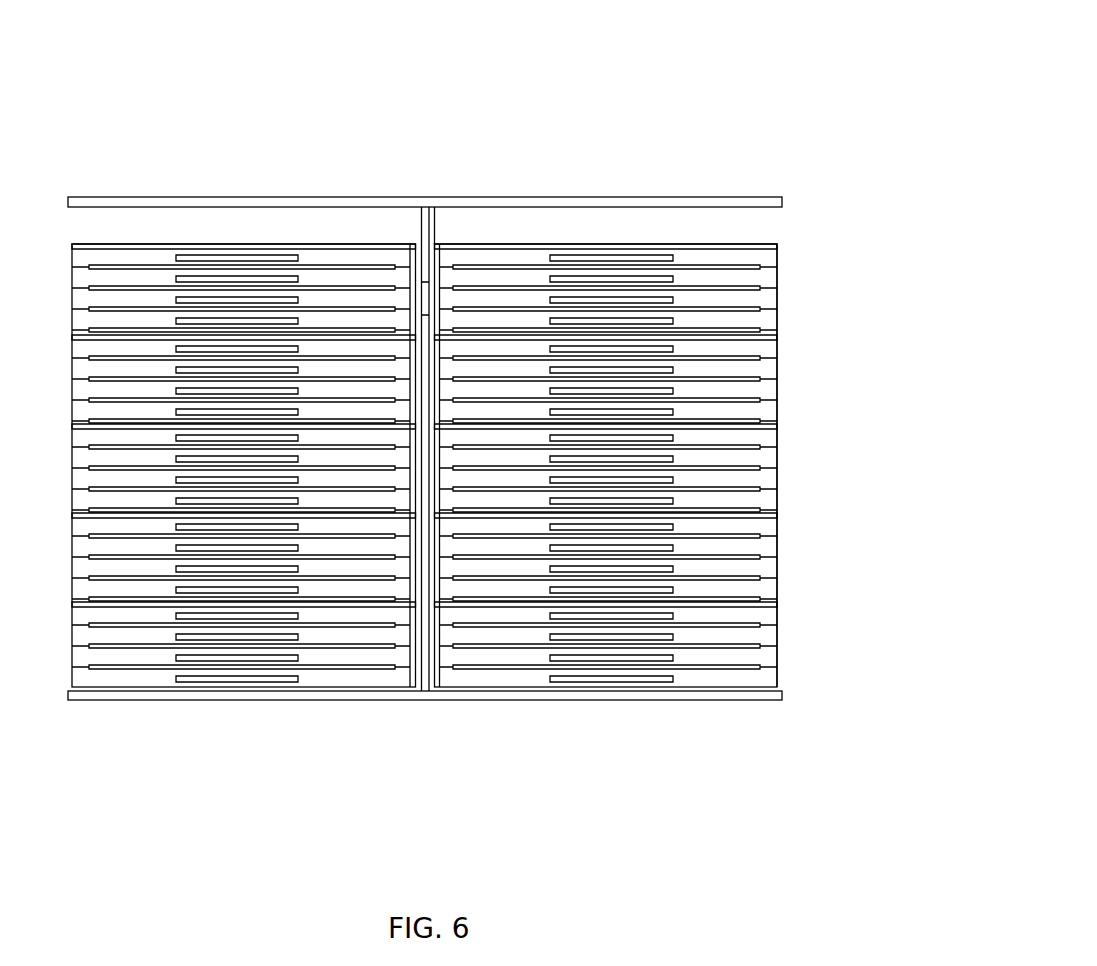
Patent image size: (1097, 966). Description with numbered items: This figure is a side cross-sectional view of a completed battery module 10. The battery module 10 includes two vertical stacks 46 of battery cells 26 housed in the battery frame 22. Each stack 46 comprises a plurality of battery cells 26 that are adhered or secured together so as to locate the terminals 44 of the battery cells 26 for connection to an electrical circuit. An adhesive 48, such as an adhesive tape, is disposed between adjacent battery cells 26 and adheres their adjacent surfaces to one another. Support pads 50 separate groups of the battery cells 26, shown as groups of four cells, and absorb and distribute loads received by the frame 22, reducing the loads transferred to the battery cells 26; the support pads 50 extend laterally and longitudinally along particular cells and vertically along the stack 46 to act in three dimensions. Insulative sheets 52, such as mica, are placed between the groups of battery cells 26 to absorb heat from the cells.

The battery module 10 is at (706, 50).
The battery frame 22 is at (423, 699).
The battery cells 26 is at (467, 257).
The terminals 44 is at (657, 258).
The stacks 46 is at (277, 222).
The adhesive 48 is at (757, 268).
The support pads 50 is at (434, 227).
The insulative sheets 52 is at (772, 337).